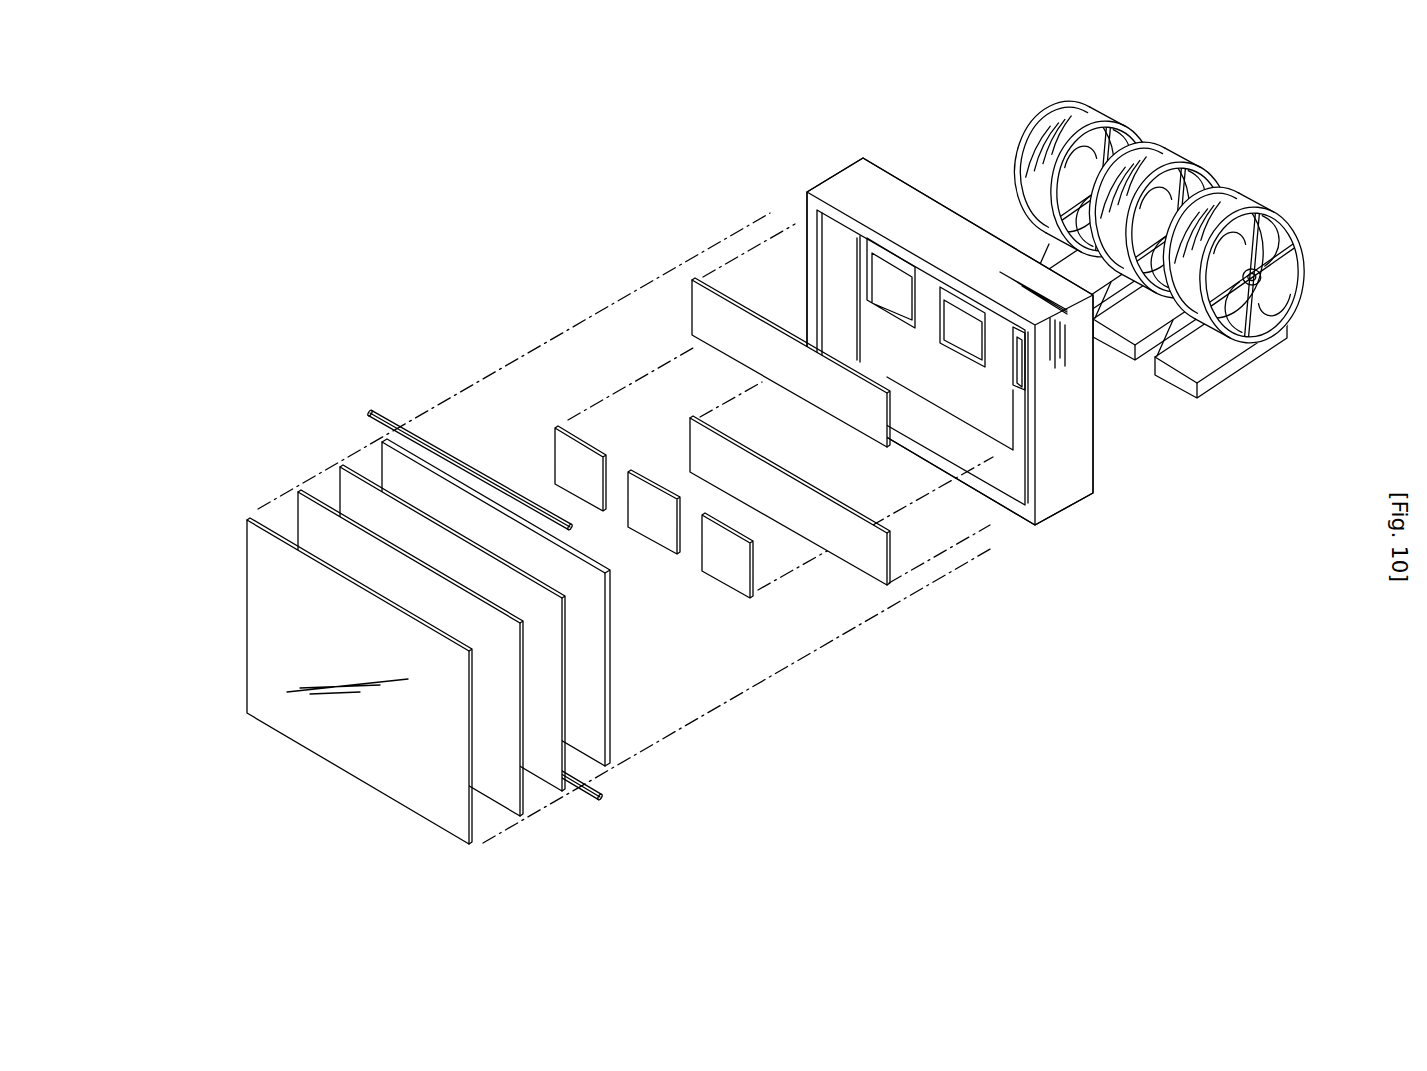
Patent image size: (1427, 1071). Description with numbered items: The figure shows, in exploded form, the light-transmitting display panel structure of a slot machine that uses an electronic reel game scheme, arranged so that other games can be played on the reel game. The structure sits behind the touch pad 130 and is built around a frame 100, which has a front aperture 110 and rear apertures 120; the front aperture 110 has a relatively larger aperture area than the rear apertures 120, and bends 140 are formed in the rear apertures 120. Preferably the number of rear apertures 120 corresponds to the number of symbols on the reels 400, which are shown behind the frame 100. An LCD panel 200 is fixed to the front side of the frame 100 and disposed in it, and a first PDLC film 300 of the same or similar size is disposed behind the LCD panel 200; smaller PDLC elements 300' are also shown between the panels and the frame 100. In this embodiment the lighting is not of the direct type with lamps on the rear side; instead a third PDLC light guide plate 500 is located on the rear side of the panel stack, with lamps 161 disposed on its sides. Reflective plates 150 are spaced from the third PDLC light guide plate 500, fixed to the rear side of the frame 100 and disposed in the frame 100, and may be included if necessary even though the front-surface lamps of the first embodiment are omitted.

The frame 100 is at (821, 147).
The front aperture 110 is at (1013, 473).
The rear apertures 120 is at (970, 325).
The touch pad 130 is at (337, 732).
The bends 140 is at (1002, 352).
The reflective plates 150 is at (692, 318).
The lamps 161 is at (373, 412).
The LCD panel 200 is at (320, 533).
The first PDLC film 300 is at (393, 595).
The auxiliary filter 300' is at (664, 632).
The reels 400 is at (1298, 382).
The third PDLC light guide plate 500 is at (381, 460).